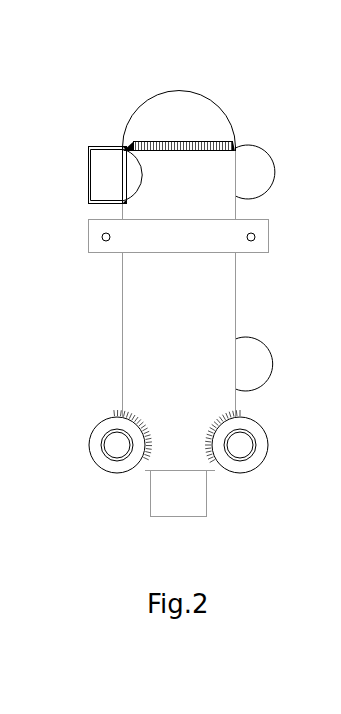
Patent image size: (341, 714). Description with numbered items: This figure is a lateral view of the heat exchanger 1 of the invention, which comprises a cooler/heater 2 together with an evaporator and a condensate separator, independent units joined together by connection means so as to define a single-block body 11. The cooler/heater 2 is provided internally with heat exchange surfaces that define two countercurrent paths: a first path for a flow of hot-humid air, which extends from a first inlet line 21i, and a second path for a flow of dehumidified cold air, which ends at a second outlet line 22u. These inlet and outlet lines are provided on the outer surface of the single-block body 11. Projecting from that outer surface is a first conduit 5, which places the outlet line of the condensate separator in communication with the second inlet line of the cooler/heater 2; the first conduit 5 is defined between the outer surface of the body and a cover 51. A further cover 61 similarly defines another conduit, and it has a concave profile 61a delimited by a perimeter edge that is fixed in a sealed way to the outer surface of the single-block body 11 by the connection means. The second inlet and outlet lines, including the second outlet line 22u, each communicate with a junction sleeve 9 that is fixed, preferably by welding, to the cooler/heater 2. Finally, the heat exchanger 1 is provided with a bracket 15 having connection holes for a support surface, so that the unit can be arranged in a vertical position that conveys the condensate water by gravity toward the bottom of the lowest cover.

The heat exchanger 1 is at (228, 90).
The cooler/heater 2 is at (222, 300).
The single-block body 11 is at (104, 328).
The cover 61 is at (210, 126).
The concave profile 61a is at (165, 122).
The first conduit 5 is at (103, 186).
The cover 51 is at (92, 165).
The bracket 15 is at (262, 228).
The junction sleeve 9 is at (102, 425).
The first inlet line 21i is at (117, 450).
The second outlet line 22u is at (247, 452).